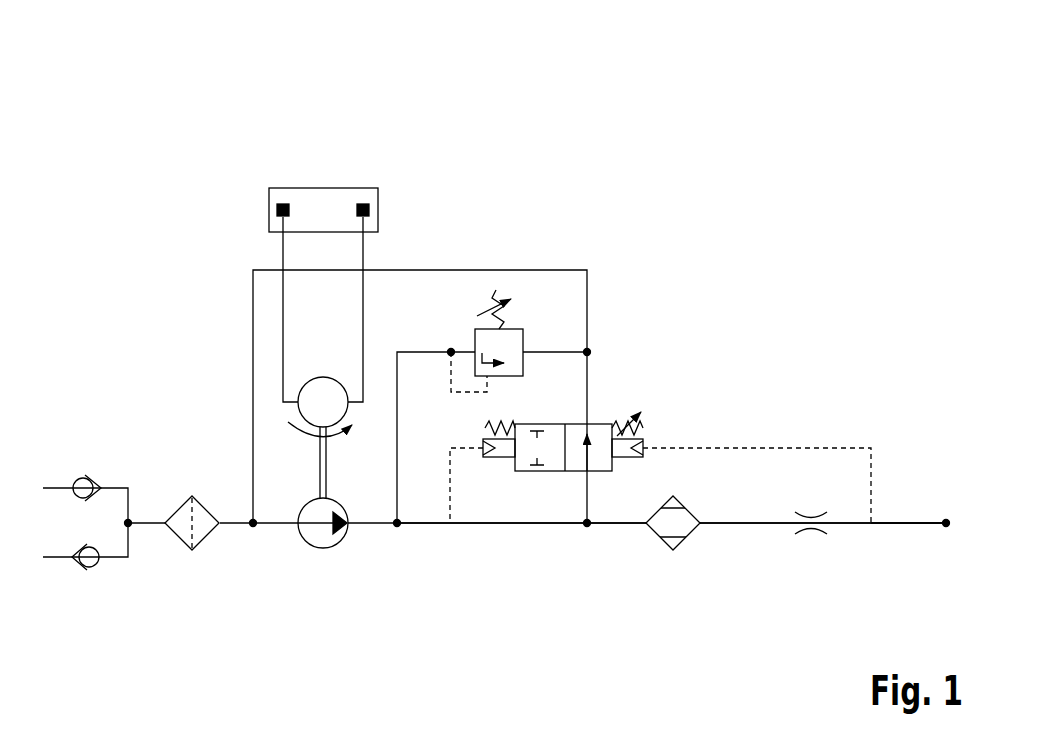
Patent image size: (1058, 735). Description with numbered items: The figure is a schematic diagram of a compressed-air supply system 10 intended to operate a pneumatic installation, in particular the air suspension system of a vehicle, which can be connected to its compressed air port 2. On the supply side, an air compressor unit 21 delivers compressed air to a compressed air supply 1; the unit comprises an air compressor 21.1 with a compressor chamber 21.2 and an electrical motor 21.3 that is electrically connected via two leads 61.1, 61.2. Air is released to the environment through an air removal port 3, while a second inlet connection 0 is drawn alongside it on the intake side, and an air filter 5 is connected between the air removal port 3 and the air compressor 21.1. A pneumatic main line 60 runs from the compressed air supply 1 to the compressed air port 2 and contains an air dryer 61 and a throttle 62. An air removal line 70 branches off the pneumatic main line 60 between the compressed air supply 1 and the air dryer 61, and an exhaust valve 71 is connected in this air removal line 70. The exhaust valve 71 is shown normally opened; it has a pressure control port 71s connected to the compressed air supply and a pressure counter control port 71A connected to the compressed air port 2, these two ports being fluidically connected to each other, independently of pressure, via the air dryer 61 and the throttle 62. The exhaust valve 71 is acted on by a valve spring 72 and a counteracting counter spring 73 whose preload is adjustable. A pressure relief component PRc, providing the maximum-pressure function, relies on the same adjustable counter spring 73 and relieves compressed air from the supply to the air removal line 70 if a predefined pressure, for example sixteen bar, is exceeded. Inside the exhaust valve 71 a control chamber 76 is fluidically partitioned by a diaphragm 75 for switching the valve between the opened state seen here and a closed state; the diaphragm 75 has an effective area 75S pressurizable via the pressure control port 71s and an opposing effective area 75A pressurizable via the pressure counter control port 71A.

The compressed-air supply system 10 is at (204, 84).
The air removal port 3 is at (62, 486).
The second inlet with check valve 0 is at (60, 562).
The air filter 5 is at (172, 538).
The air compressor unit 21 is at (288, 417).
The air compressor 21.1 is at (325, 548).
The compressor chamber 21.2 is at (313, 532).
The electrical motor 21.3 is at (318, 377).
The lead 61.1 is at (283, 203).
The lead 61.2 is at (363, 203).
The air removal line 70 is at (590, 307).
The compressed air supply 1 is at (393, 540).
The pressure relief component PRc is at (551, 297).
The counter spring 73 is at (493, 292).
The exhaust valve 71 is at (642, 484).
The valve spring 72 is at (487, 428).
The pressure control port 71s is at (487, 456).
The pressure counter control port 71A is at (648, 443).
The control chamber 76 is at (572, 535).
The diaphragm 75 is at (572, 535).
The effective area 75S is at (572, 535).
The opposing effective area 75A is at (551, 482).
The pneumatic main line 60 is at (520, 535).
The air dryer 61 is at (652, 538).
The throttle 62 is at (810, 540).
The compressed air port 2 is at (946, 535).